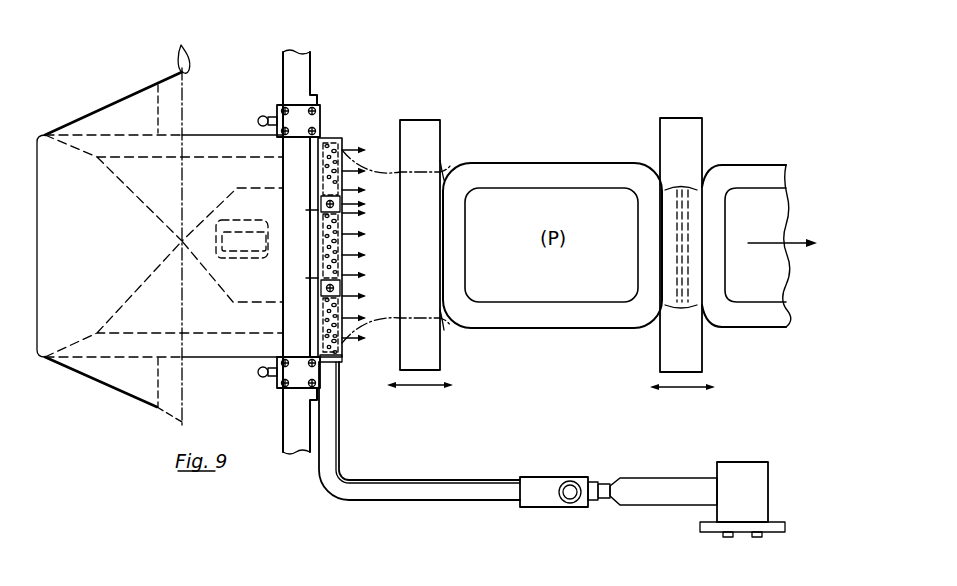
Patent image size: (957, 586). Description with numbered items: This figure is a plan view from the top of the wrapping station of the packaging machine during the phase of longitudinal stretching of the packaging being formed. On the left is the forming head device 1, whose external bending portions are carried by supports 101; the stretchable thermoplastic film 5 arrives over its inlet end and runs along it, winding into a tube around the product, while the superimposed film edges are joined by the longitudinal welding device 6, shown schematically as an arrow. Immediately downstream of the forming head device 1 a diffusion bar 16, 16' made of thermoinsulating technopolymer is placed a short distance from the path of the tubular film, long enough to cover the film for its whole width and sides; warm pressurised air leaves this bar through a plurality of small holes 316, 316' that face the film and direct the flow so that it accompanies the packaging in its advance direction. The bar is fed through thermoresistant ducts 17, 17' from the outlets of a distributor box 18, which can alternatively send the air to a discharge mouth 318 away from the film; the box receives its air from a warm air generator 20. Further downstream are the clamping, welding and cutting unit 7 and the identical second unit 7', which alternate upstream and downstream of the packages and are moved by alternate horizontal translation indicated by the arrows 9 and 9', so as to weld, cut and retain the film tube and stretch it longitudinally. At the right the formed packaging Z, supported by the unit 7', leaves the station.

The forming head device 1 is at (219, 132).
The thermoplastic stretchable film 5 is at (181, 46).
The longitudinal welding device 6 is at (257, 258).
The supports 101 is at (315, 101).
The diffusion bar 16 is at (358, 230).
The diffusion bar 16' is at (330, 248).
The small holes 316 is at (370, 192).
The small holes 316' is at (373, 277).
The clamping, welding and cutting unit 7 is at (422, 214).
The second clamping, welding and cutting unit 7' is at (681, 216).
The alternate horizontal translation 9 is at (420, 398).
The alternate horizontal translation 9' is at (682, 400).
The formed packaging Z is at (772, 160).
The thermoresistant duct 17 is at (419, 431).
The thermoresistant duct 17' is at (428, 422).
The distributor box 18 is at (541, 470).
The discharge mouth 318 is at (574, 489).
The warm air generator 20 is at (730, 476).